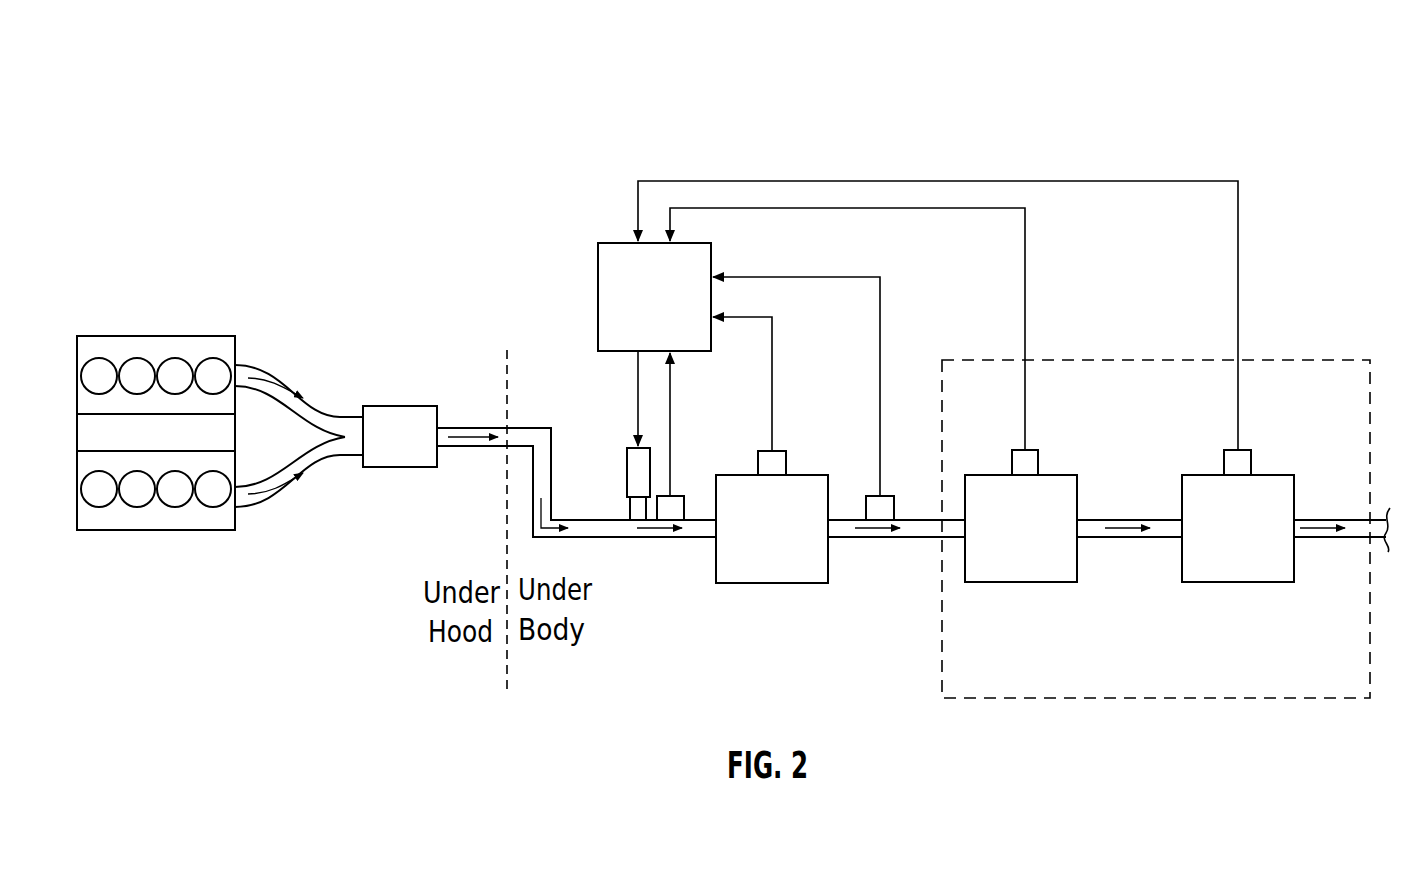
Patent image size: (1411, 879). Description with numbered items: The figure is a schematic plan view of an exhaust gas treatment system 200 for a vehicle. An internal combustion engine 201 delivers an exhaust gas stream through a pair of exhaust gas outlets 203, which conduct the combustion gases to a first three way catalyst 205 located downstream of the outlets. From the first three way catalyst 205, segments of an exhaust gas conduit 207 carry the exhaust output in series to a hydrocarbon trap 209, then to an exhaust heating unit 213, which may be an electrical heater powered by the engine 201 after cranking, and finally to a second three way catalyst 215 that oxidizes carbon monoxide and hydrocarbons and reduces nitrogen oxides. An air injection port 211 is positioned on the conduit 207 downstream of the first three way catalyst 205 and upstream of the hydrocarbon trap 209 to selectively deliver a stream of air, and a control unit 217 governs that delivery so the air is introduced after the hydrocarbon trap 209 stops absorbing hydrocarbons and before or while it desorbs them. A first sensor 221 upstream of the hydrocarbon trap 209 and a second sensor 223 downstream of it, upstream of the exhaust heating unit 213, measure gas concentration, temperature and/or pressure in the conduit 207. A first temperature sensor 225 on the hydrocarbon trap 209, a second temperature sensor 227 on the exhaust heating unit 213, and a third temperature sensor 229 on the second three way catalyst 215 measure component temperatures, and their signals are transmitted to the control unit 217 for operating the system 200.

The exhaust gas treatment system 200 is at (170, 100).
The internal combustion engine 201 is at (120, 336).
The exhaust gas outlet 203 is at (261, 366).
The first three way catalyst 205 is at (405, 406).
The exhaust gas conduit 207 is at (630, 538).
The hydrocarbon trap 209 is at (775, 583).
The air injection port 211 is at (627, 473).
The exhaust heating unit 213 is at (1022, 582).
The second three way catalyst 215 is at (1237, 582).
The control unit 217 is at (613, 243).
The first sensor 221 is at (684, 493).
The second sensor 223 is at (888, 496).
The first temperature sensor 225 is at (778, 450).
The second temperature sensor 227 is at (1038, 465).
The third temperature sensor 229 is at (1251, 465).